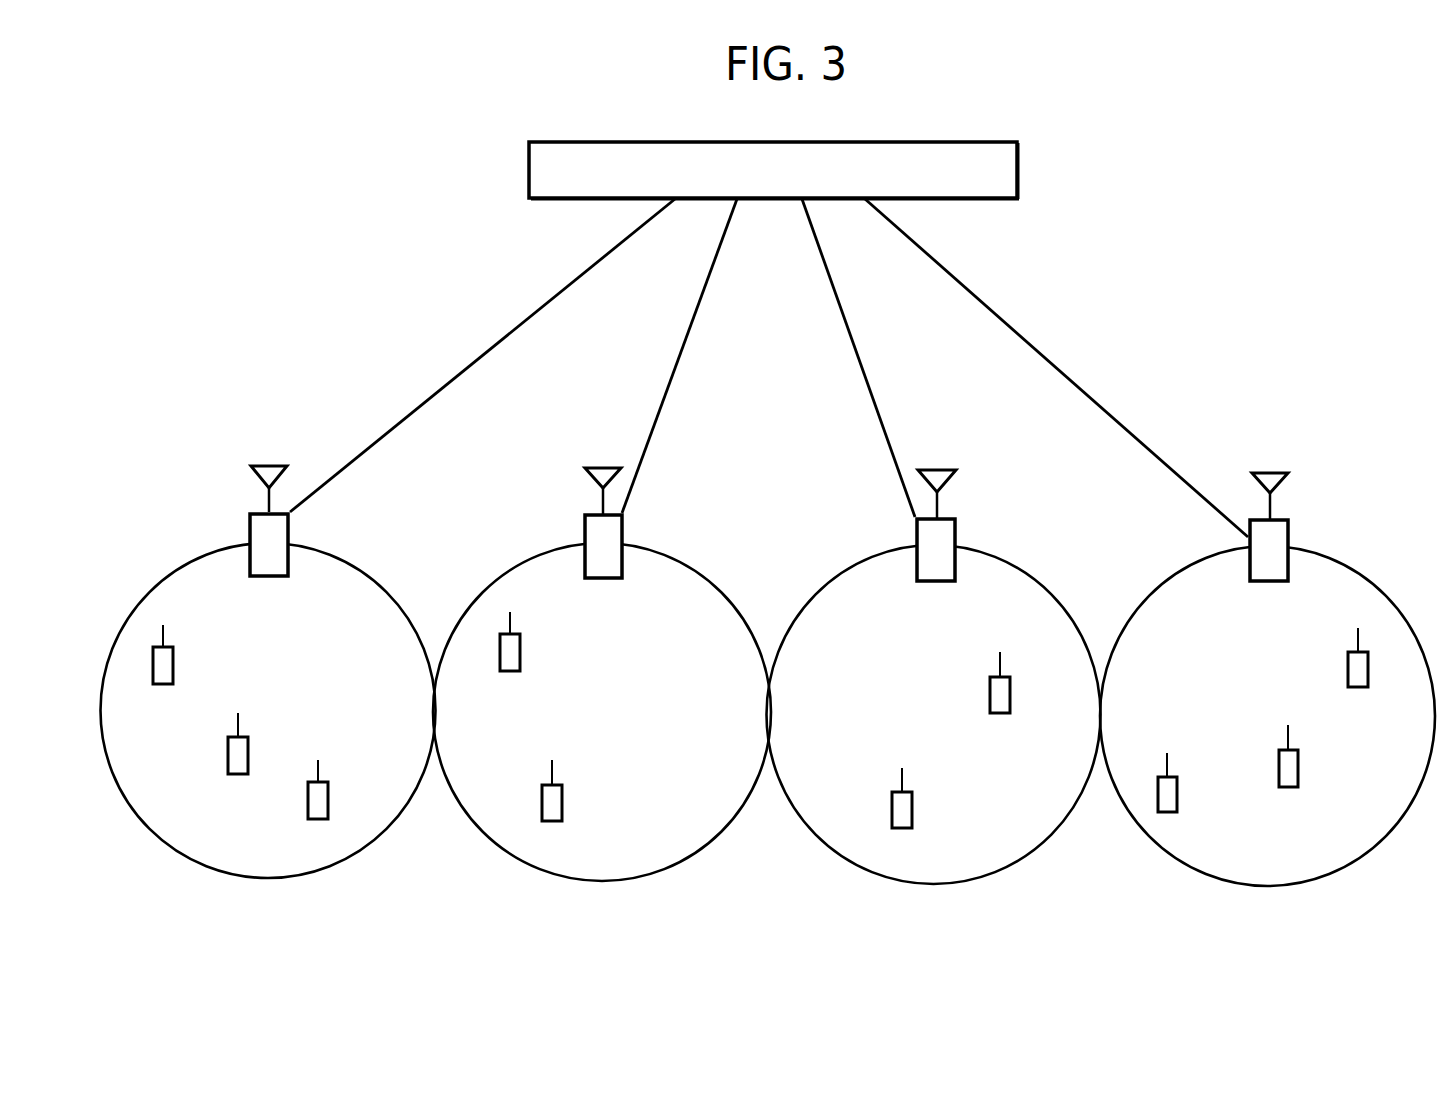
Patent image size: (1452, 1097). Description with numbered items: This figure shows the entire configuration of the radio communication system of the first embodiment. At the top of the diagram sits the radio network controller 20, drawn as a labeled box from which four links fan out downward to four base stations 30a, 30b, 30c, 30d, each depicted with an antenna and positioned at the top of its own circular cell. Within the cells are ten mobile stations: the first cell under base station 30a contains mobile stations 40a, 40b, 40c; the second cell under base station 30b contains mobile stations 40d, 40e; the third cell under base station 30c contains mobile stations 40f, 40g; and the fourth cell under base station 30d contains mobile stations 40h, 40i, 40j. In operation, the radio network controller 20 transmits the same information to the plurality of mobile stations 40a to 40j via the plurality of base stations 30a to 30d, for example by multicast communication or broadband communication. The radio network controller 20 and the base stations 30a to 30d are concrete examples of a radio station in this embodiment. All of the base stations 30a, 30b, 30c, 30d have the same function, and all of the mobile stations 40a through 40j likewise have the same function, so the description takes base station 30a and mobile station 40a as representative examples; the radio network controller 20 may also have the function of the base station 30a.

The radio network controller 20 is at (1020, 182).
The base station 30a is at (292, 520).
The base station 30b is at (625, 523).
The base station 30c is at (959, 524).
The base station 30d is at (1292, 527).
The mobile station 40a is at (163, 686).
The mobile station 40b is at (249, 742).
The mobile station 40c is at (329, 795).
The mobile station 40d is at (521, 666).
The mobile station 40e is at (541, 796).
The mobile station 40f is at (1000, 715).
The mobile station 40g is at (892, 802).
The mobile station 40h is at (1179, 793).
The mobile station 40i is at (1288, 788).
The mobile station 40j is at (1362, 690).